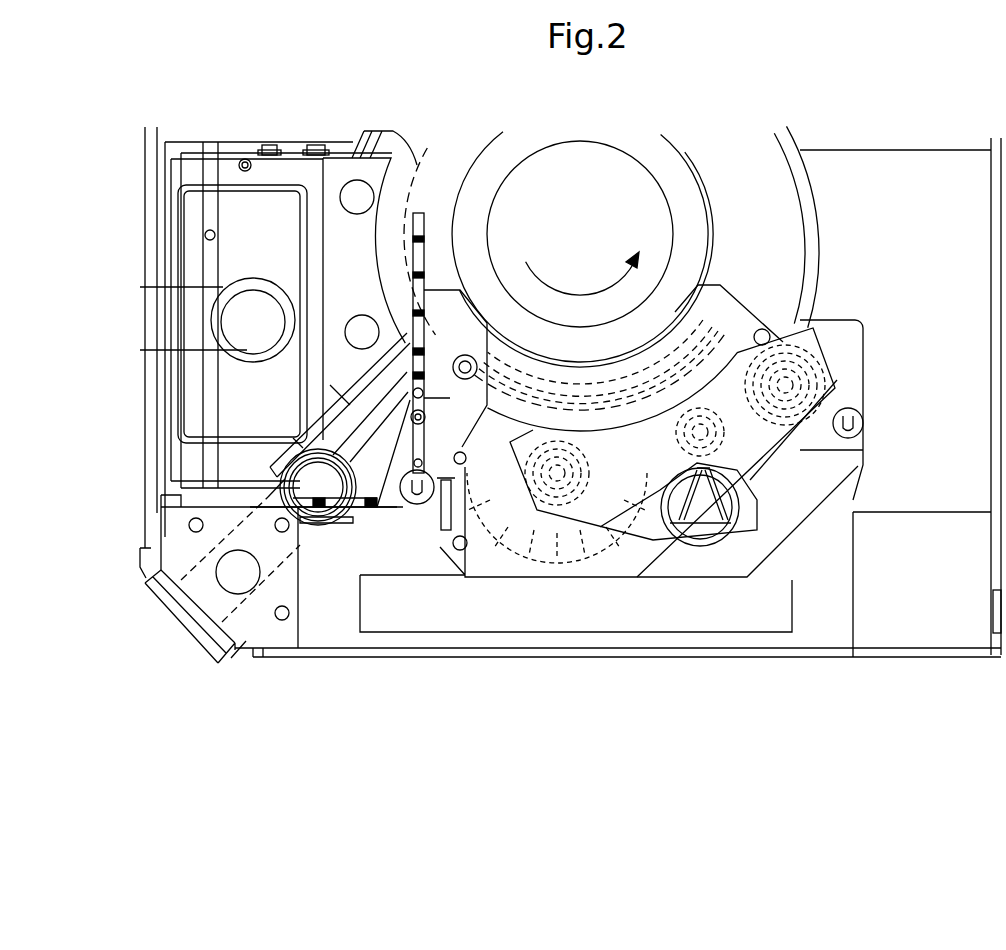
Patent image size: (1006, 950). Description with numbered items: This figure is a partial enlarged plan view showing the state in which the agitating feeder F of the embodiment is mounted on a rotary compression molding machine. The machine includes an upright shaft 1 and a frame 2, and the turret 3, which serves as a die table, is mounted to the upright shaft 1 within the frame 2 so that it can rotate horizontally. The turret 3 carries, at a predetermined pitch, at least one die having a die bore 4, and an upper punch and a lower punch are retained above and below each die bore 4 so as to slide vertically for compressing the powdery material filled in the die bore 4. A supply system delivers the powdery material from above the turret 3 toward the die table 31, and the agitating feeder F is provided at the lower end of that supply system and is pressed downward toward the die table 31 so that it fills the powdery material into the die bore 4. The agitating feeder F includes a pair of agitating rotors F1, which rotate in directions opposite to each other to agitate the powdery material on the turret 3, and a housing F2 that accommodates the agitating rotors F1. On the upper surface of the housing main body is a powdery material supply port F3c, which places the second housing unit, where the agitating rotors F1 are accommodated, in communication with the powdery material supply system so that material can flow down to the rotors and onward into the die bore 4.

The upright shaft 1 is at (588, 136).
The frame 2 is at (290, 630).
The turret 3 is at (812, 197).
The die bore 4 is at (467, 355).
The die table 31 is at (357, 133).
The agitating feeder F is at (840, 374).
The agitating rotors F1 is at (550, 547).
The housing F2 is at (806, 543).
The powdery material supply port F3c is at (673, 528).